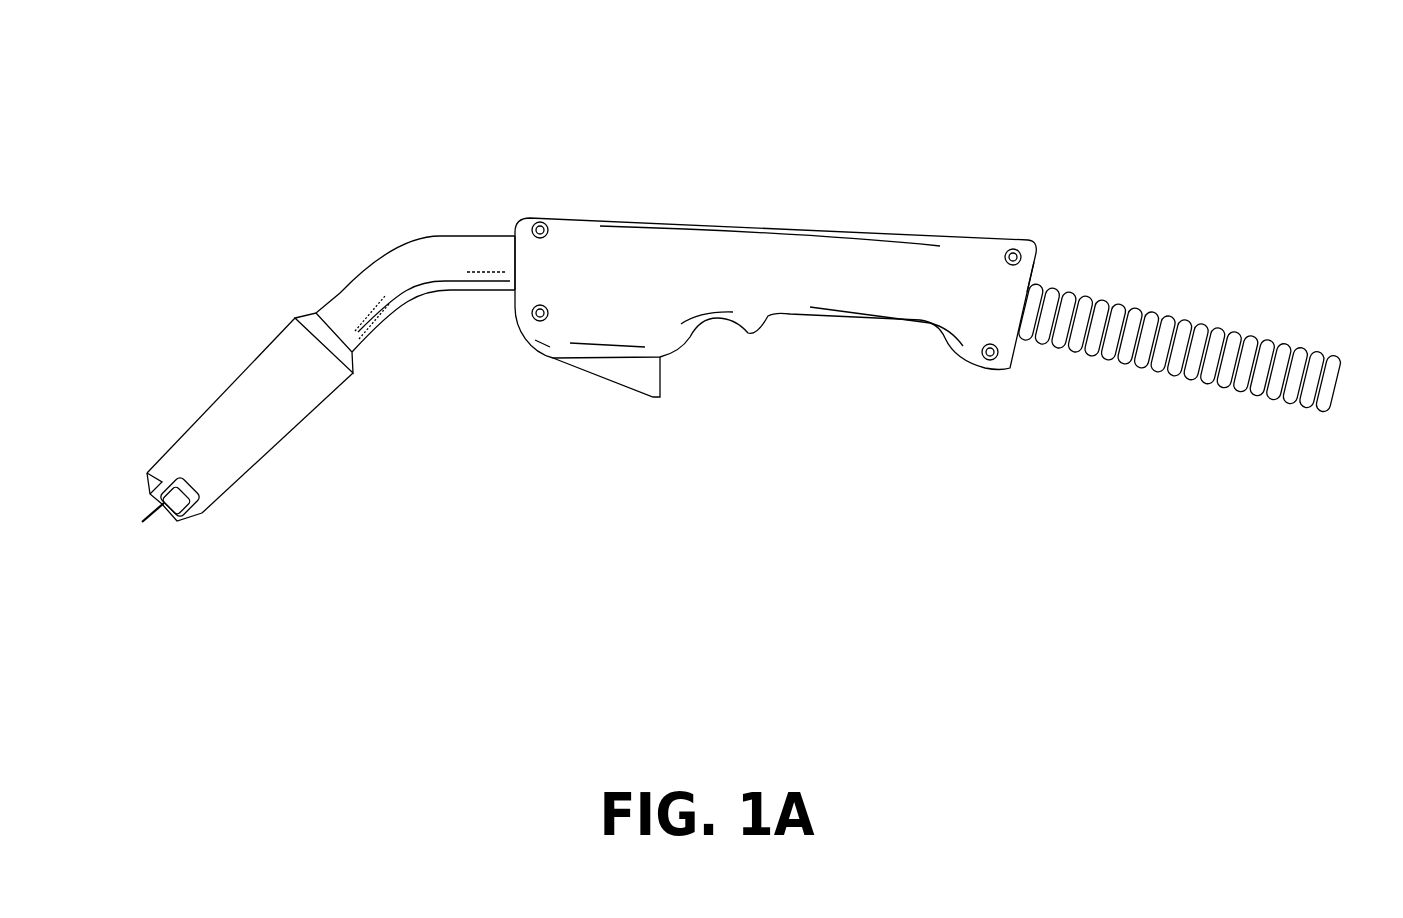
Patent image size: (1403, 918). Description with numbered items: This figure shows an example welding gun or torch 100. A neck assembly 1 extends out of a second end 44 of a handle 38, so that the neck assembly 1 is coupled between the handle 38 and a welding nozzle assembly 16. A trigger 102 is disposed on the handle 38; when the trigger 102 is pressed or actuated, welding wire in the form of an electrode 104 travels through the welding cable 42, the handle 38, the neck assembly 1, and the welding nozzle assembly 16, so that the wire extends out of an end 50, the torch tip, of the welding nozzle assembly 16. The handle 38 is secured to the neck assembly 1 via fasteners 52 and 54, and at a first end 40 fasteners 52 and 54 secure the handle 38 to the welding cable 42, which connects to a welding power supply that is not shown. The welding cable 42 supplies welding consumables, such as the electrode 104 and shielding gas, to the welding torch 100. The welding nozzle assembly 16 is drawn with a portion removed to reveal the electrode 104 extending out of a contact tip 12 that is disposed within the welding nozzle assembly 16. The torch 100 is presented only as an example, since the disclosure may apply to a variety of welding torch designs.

The welding torch 100 is at (604, 60).
The neck assembly 1 is at (320, 310).
The welding nozzle assembly 16 is at (211, 404).
The contact tip 12 is at (196, 517).
The end 50 is at (148, 502).
The electrode 104 is at (153, 522).
The handle 38 is at (789, 254).
The second end 44 is at (514, 232).
The trigger 102 is at (612, 368).
The fasteners 52 is at (547, 229).
The fasteners 54 is at (537, 321).
The first end 40 is at (1010, 278).
The welding cable 42 is at (1213, 385).